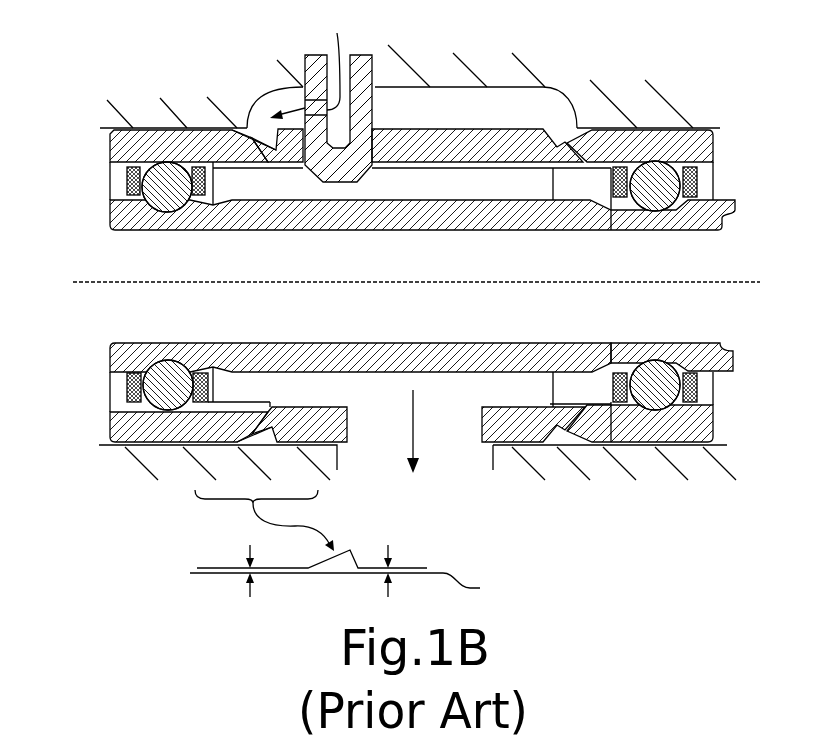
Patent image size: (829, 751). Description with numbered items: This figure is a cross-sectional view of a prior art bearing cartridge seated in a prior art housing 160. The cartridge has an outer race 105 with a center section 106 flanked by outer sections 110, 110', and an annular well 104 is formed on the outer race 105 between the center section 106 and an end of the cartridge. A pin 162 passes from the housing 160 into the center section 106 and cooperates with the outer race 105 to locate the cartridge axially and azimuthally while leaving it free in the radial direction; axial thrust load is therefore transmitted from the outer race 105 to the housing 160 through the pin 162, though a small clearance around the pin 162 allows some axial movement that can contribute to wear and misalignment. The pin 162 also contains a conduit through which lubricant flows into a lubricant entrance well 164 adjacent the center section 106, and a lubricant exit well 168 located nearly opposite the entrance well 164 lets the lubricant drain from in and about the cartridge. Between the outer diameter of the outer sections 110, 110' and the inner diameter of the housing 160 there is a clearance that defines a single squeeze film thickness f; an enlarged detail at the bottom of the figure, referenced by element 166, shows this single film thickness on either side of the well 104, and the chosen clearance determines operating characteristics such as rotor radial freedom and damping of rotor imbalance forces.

The annular well 104 is at (352, 550).
The outer race 105 is at (112, 140).
The center section 106 is at (480, 157).
The outer section 110 is at (193, 286).
The outer section 110' is at (640, 286).
The housing 160 is at (548, 58).
The pin 162 is at (367, 172).
The lubricant entrance well 164 is at (454, 121).
The molded sheet 166 is at (352, 587).
The lubricant exit well 168 is at (468, 470).